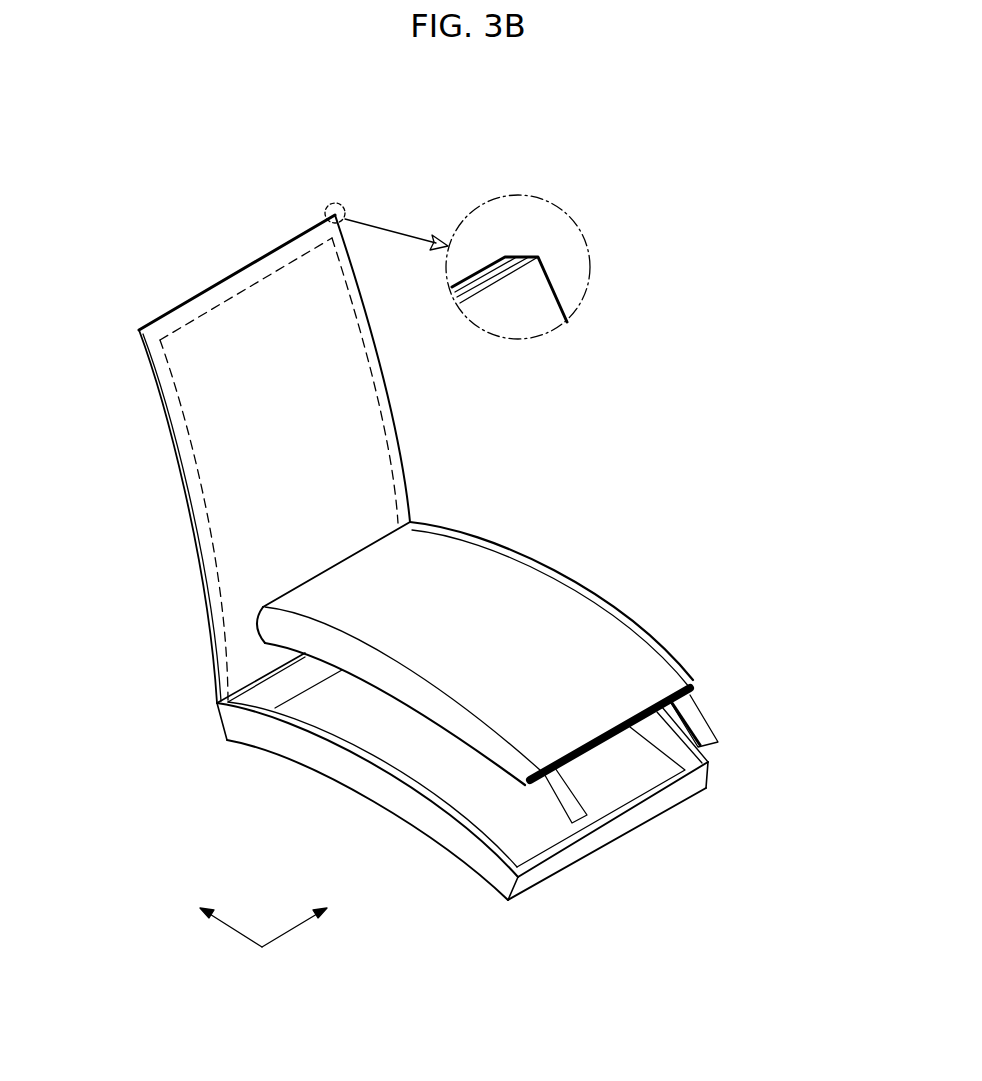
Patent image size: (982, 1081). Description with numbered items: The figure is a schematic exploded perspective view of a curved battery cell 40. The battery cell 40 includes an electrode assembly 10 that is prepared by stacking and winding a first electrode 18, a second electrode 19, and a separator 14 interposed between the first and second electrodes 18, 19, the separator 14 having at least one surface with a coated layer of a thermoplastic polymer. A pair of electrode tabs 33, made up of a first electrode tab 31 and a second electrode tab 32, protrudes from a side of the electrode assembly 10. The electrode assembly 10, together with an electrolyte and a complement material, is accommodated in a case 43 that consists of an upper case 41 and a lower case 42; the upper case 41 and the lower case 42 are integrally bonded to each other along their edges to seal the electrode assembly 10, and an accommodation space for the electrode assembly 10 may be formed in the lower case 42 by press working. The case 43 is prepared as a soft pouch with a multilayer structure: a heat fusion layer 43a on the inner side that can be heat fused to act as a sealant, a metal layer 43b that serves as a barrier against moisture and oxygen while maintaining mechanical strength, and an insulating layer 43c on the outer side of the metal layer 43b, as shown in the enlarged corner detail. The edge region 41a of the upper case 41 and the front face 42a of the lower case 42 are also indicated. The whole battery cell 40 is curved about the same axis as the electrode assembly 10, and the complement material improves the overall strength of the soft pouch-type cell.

The electrode assembly 10 is at (550, 593).
The separator 14 is at (700, 688).
The first electrode 18 is at (697, 681).
The second electrode 19 is at (702, 693).
The first electrode tab 31 is at (577, 813).
The second electrode tab 32 is at (707, 740).
The pair of electrode tabs 33 is at (637, 882).
The battery cell 40 is at (569, 456).
The upper case 41 is at (210, 631).
The edge portion of back support 41a is at (195, 485).
The lower case 42 is at (237, 727).
The front surface of seat support 42a is at (380, 790).
The case 43 is at (125, 675).
The heat fusion layer 43a is at (540, 257).
The metal layer 43b is at (517, 258).
The insulating layer 43c is at (505, 257).